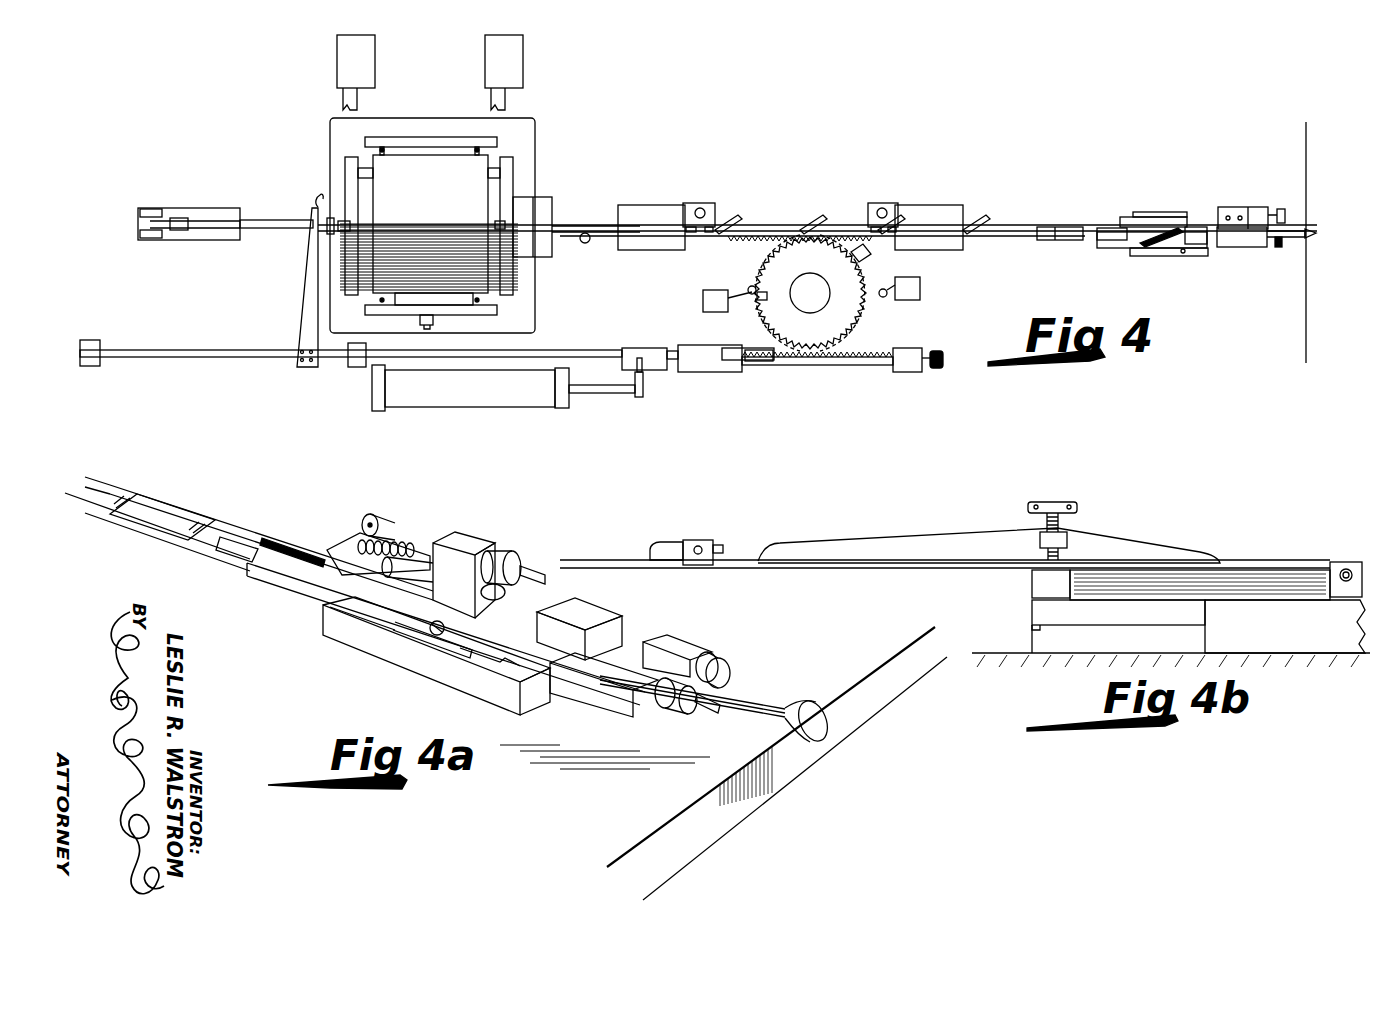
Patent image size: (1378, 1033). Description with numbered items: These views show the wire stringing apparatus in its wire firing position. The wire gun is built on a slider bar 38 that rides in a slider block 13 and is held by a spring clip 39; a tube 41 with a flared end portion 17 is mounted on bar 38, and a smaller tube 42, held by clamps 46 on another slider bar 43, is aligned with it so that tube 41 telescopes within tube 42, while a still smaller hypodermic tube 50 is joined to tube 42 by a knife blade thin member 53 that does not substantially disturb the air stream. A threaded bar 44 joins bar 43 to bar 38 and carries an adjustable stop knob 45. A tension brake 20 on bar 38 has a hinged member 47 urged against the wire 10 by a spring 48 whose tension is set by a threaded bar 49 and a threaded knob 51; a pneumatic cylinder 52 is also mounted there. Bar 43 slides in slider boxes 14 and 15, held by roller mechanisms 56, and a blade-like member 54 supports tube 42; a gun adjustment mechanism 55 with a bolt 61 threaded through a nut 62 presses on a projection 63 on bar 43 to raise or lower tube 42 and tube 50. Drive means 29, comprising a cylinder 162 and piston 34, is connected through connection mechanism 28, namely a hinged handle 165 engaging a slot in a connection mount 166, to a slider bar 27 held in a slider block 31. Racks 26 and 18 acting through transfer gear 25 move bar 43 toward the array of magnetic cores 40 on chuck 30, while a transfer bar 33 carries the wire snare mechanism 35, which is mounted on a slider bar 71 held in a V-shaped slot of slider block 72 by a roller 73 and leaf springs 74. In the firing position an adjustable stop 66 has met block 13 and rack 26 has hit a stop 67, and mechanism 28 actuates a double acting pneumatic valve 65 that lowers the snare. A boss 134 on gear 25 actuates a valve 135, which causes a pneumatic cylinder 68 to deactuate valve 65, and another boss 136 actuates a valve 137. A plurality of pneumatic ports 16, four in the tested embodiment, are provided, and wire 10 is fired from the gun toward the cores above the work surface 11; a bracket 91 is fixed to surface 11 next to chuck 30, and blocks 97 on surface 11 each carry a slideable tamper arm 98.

In FIG. 4, the wire 10 is at (1050, 224).
In FIG. 4A, the wire 10 is at (157, 505).
In FIG. 4B, the wire 10 is at (1010, 564).
In FIG. 4, the work surface 11 is at (1308, 302).
In FIG. 4A, the work surface 11 is at (801, 768).
In FIG. 4B, the work surface 11 is at (1030, 650).
In FIG. 4, the slider block 13 is at (1142, 256).
In FIG. 4A, the slider block 13 is at (320, 622).
In FIG. 4, the slider box 14 is at (936, 205).
In FIG. 4, the slider block 15 is at (658, 205).
In FIG. 4B, the slider block 15 is at (1205, 635).
In FIG. 4, the pneumatic ports 16 is at (723, 227).
In FIG. 4, the flared end portion 17 is at (1313, 238).
In FIG. 4A, the flared end portion 17 is at (796, 710).
In FIG. 4, the rack 18 is at (750, 242).
In FIG. 4, the tension brake 20 is at (1235, 180).
In FIG. 4A, the tension brake 20 is at (510, 520).
In FIG. 4, the transfer gear 25 is at (866, 338).
In FIG. 4, the rack 26 is at (847, 365).
In FIG. 4, the slider bar 27 is at (190, 358).
In FIG. 4, the releasable connection mechanism 28 is at (647, 397).
In FIG. 4, the pneumatic actuating means 29 is at (440, 407).
In FIG. 4, the chuck 30 is at (373, 158).
In FIG. 4, the slider block 31 is at (88, 367).
In FIG. 4, the transfer bar 33 is at (303, 302).
In FIG. 4, the piston 34 is at (597, 393).
In FIG. 4, the wire snare mechanism 35 is at (320, 207).
In FIG. 4, the slider bar 38 is at (1108, 248).
In FIG. 4A, the slider bar 38 is at (294, 586).
In FIG. 4, the spring clip 39 is at (1176, 256).
In FIG. 4A, the spring clip 39 is at (446, 658).
In FIG. 4, the array of magnetic cores 40 is at (437, 199).
In FIG. 4, the tube 41 is at (1105, 232).
In FIG. 4A, the tube 41 is at (277, 538).
In FIG. 4, the tube 42 is at (580, 222).
In FIG. 4A, the tube 42 is at (135, 492).
In FIG. 4, the slider bar 43 is at (1030, 237).
In FIG. 4A, the slider bar 43 is at (165, 545).
In FIG. 4B, the slider bar 43 is at (1032, 613).
In FIG. 4, the threaded bar 44 is at (1290, 240).
In FIG. 4A, the threaded bar 44 is at (245, 556).
In FIG. 4, the adjustable stop knob 45 is at (1278, 247).
In FIG. 4A, the adjustable stop knob 45 is at (664, 707).
In FIG. 4B, the clamps 46 is at (1345, 562).
In FIG. 4, the hinged member 47 is at (1140, 217).
In FIG. 4A, the hinged member 47 is at (358, 530).
In FIG. 4, the spring 48 is at (1161, 230).
In FIG. 4A, the spring 48 is at (395, 545).
In FIG. 4, the threaded bar 49 is at (1187, 227).
In FIG. 4A, the threaded bar 49 is at (428, 556).
In FIG. 4, the hypodermic tube 50 is at (492, 215).
In FIG. 4A, the hypodermic tube 50 is at (665, 560).
In FIG. 4, the threaded knob 51 is at (1222, 247).
In FIG. 4A, the threaded knob 51 is at (520, 546).
In FIG. 4A, the pneumatic cylinder 52 is at (457, 540).
In FIG. 4A, the knife blade thin member 53 is at (671, 545).
In FIG. 4, the blade-like member 54 is at (582, 244).
In FIG. 4A, the blade-like member 54 is at (783, 544).
In FIG. 4, the gun adjustment mechanism 55 is at (593, 242).
In FIG. 4B, the gun adjustment mechanism 55 is at (1027, 496).
In FIG. 4, the roller mechanisms 56 is at (703, 200).
In FIG. 4B, the bolt 61 is at (1047, 500).
In FIG. 4B, the threaded nut 62 is at (1067, 540).
In FIG. 4B, the projection 63 is at (1032, 583).
In FIG. 4, the double acting pneumatic valve 65 is at (711, 372).
In FIG. 4, the adjustable stop 66 is at (1257, 207).
In FIG. 4A, the adjustable stop 66 is at (664, 648).
In FIG. 4, the stop 67 is at (906, 372).
In FIG. 4, the pneumatic cylinder 68 is at (757, 361).
In FIG. 4, the slider bar 71 is at (266, 232).
In FIG. 4, the slider block 72 is at (230, 208).
In FIG. 4, the roller 73 is at (195, 232).
In FIG. 4, the leaf springs 74 is at (158, 208).
In FIG. 4, the bracket 91 is at (556, 200).
In FIG. 4, the blocks 97 is at (337, 48).
In FIG. 4, the slideable tamper arm 98 is at (343, 102).
In FIG. 4, the boss 134 is at (749, 300).
In FIG. 4, the valve 135 is at (709, 290).
In FIG. 4, the boss 136 is at (871, 255).
In FIG. 4, the valve 137 is at (921, 288).
In FIG. 4, the cylinder 162 is at (500, 408).
In FIG. 4, the hinged handle 165 is at (637, 395).
In FIG. 4, the connection mount 166 is at (662, 348).